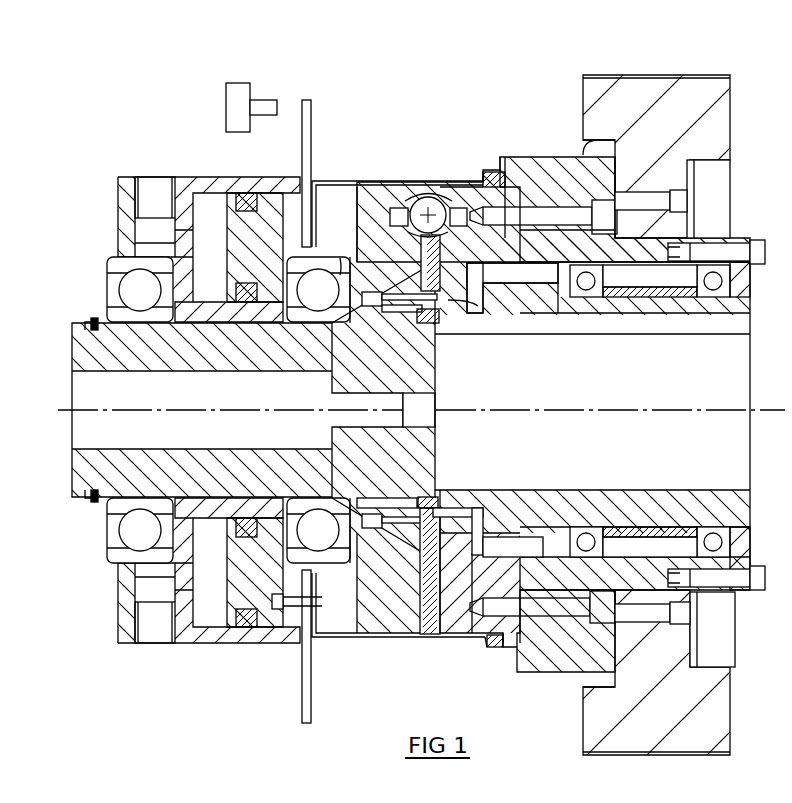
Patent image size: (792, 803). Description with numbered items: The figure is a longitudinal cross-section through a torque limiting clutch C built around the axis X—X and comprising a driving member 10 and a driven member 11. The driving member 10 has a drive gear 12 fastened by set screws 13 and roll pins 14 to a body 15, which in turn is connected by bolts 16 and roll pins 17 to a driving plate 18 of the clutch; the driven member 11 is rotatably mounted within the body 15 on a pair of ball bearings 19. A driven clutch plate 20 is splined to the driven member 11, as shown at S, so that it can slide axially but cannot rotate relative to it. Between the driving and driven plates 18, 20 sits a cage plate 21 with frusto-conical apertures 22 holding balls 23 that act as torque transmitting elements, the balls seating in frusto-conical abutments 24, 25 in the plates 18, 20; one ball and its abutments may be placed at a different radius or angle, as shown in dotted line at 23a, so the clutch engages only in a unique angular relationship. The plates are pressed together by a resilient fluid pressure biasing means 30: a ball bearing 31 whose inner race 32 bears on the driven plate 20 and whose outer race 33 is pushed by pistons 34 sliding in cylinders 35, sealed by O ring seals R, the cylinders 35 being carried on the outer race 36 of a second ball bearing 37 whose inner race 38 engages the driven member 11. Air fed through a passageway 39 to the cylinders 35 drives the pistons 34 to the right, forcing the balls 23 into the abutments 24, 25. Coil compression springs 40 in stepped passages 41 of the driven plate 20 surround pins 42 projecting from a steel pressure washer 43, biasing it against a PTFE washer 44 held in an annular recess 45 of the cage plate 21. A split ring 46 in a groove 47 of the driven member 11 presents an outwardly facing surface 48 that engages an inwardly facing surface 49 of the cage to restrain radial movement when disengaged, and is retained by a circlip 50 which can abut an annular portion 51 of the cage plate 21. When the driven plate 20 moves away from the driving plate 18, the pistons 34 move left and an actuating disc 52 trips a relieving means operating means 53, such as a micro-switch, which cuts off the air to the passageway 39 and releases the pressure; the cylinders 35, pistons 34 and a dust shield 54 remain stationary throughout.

The driving member 10 is at (745, 129).
The driven member 11 is at (82, 482).
The drive gear 12 is at (688, 75).
The set screws 13 is at (728, 650).
The roll pins 14 is at (688, 210).
The body 15 is at (561, 157).
The bolts 16 is at (508, 222).
The roll pins 17 is at (517, 648).
The driving plate 18 is at (460, 634).
The ball bearings 19 is at (596, 298).
The driven clutch plate 20 is at (418, 198).
The cage plate 21 is at (433, 196).
The apertures 22 is at (452, 206).
The balls 23 is at (441, 200).
The ball at different position 23a is at (495, 170).
The torque transmitting abutments 24 is at (482, 206).
The torque transmitting abutments 25 is at (428, 200).
The resilient fluid pressure biasing means 30 is at (199, 110).
The ball bearing 31 is at (324, 240).
The inner race 32 is at (306, 324).
The outer race 33 is at (342, 259).
The pistons 34 is at (280, 198).
The cylinders 35 is at (196, 178).
The outer race 36 is at (112, 258).
The second ball bearing 37 is at (130, 290).
The inner race 38 is at (118, 312).
The passageway 39 is at (147, 178).
The coil compression springs 40 is at (388, 196).
The stepped passages 41 is at (390, 308).
The pins 42 is at (357, 235).
The pressure ring or washer 43 is at (512, 288).
The PTFE washer 44 is at (526, 334).
The recess 45 is at (480, 583).
The split ring 46 is at (442, 320).
The groove 47 is at (416, 497).
The outwardly facing surface part 48 is at (446, 306).
The inwardly facing surface part 49 is at (441, 304).
The circlip 50 is at (430, 330).
The annular portion 51 is at (452, 302).
The relieving means actuating disc 52 is at (307, 100).
The relieving means operating means 53 is at (238, 84).
The dust shield 54 is at (362, 182).
The spline S is at (419, 409).
The axis X is at (413, 413).
The O ring seal R is at (246, 194).
The torque limiting clutch C is at (572, 44).